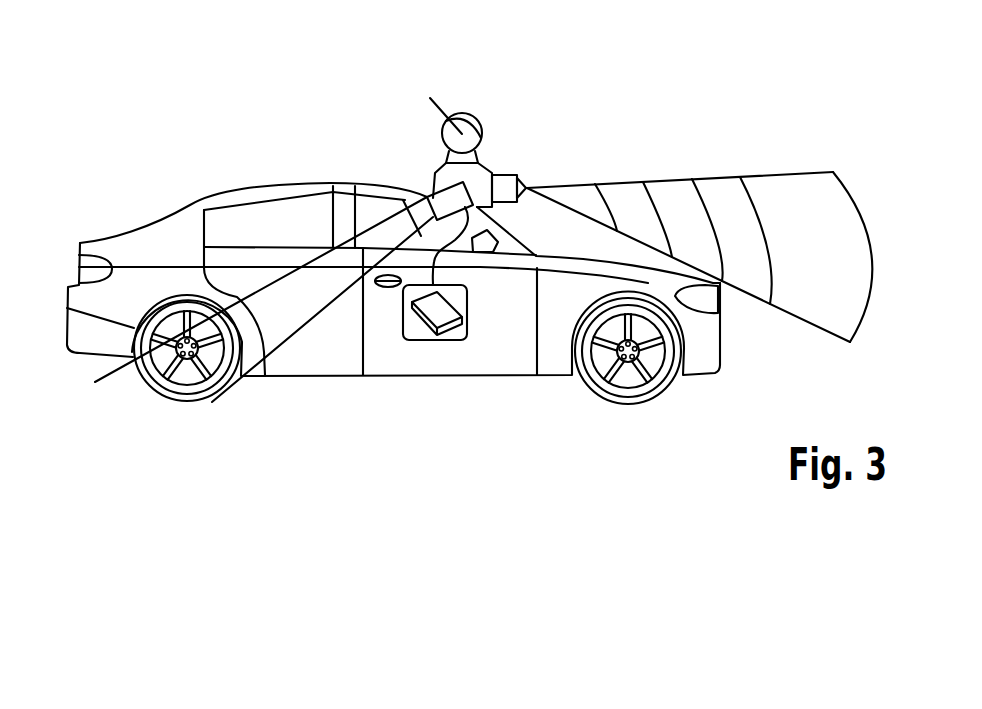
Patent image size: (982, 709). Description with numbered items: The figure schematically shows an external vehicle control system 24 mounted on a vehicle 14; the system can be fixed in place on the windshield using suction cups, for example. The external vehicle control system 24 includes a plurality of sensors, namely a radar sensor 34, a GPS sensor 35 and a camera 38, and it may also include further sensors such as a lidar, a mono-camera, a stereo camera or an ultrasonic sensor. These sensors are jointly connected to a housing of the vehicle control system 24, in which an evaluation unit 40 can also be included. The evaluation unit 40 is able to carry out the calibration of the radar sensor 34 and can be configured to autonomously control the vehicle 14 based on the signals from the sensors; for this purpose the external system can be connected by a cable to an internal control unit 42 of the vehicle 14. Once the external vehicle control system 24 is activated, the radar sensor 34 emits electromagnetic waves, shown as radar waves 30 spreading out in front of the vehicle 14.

The vehicle 14 is at (69, 287).
The external vehicle control system 24 is at (550, 84).
The radar waves 30 is at (838, 283).
The radar sensor 34 is at (523, 182).
The GPS sensor 35 is at (482, 114).
The camera 38 is at (448, 198).
The evaluation unit 40 is at (445, 180).
The control unit 42 is at (437, 340).